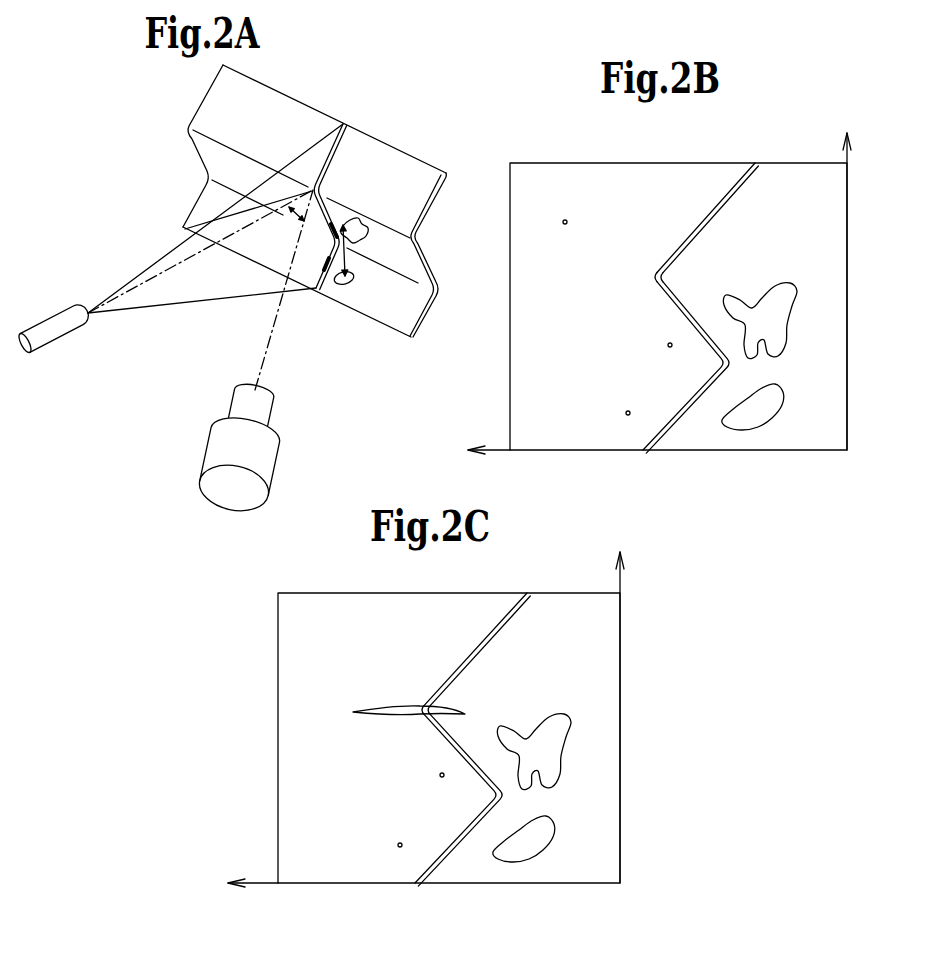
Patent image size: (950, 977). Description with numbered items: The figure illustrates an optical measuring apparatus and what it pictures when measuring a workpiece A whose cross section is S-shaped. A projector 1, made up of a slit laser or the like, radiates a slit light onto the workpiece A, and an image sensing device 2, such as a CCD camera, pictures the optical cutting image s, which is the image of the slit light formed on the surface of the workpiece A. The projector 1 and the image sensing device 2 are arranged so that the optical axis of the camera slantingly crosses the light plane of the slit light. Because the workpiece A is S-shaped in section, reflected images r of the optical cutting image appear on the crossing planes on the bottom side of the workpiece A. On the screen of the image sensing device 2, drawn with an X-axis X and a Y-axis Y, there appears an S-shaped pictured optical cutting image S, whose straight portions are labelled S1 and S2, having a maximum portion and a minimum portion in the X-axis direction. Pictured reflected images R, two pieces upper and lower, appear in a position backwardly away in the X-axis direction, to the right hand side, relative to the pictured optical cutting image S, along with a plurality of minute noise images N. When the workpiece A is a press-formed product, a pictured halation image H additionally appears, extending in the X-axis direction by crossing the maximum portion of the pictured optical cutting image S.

In FIG. 2A, the projector 1 is at (52, 322).
In FIG. 2A, the image sensing device 2 is at (272, 463).
In FIG. 2A, the workpiece A is at (405, 162).
In FIG. 2A, the optical cutting image s is at (337, 157).
In FIG. 2A, the reflected images r is at (353, 233).
In FIG. 2B, the pictured optical cutting image S is at (663, 257).
In FIG. 2C, the pictured optical cutting image S is at (435, 685).
In FIG. 2B, the first light line segment S1 is at (710, 212).
In FIG. 2C, the first light line segment S1 is at (482, 638).
In FIG. 2B, the second light line segment S2 is at (672, 312).
In FIG. 2C, the second light line segment S2 is at (443, 743).
In FIG. 2B, the minute noise images N is at (563, 225).
In FIG. 2C, the minute noise images N is at (440, 778).
In FIG. 2B, the pictured reflected images R is at (795, 303).
In FIG. 2C, the pictured reflected images R is at (570, 732).
In FIG. 2C, the pictured halation image H is at (373, 715).
In FIG. 2B, the X-axis X is at (489, 431).
In FIG. 2C, the X-axis X is at (253, 865).
In FIG. 2B, the Y-axis Y is at (845, 267).
In FIG. 2C, the Y-axis Y is at (618, 699).